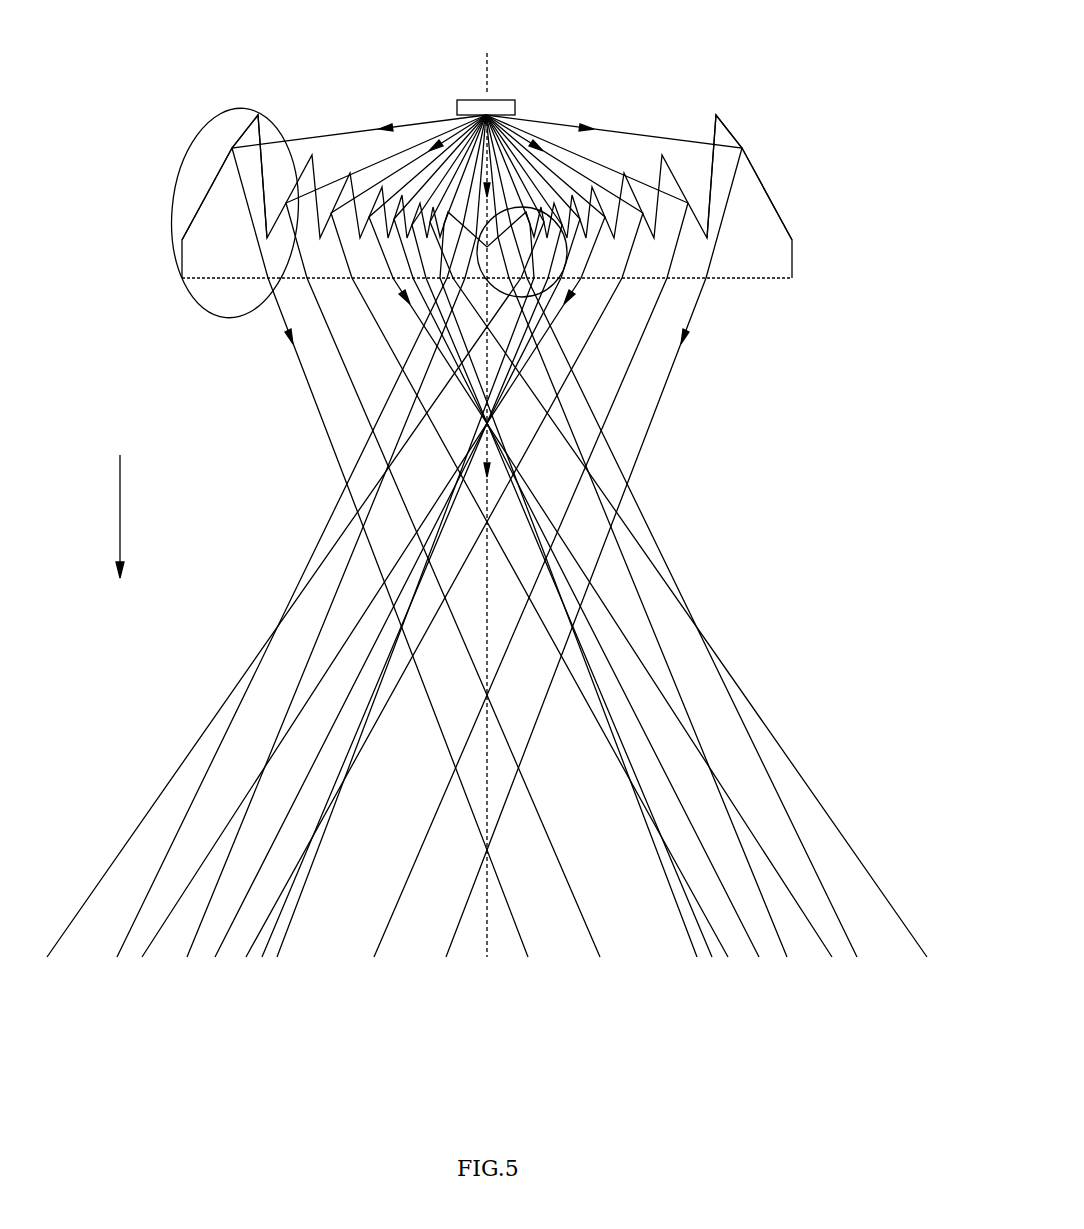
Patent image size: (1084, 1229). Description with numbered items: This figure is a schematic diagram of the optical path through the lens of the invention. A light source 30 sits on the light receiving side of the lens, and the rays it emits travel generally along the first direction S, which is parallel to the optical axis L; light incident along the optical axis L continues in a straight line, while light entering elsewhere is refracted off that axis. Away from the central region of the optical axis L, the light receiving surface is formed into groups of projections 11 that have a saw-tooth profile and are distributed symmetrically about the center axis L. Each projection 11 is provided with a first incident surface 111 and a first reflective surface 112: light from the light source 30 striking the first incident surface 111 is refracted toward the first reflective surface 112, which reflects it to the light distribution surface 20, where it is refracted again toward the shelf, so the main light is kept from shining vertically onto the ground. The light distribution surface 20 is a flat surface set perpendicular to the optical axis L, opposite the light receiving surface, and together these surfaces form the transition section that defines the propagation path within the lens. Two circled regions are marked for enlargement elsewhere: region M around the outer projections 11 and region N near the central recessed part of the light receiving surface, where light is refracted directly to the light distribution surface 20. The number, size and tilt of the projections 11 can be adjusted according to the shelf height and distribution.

The projections 11 is at (215, 195).
The first incident surface 111 is at (262, 130).
The first reflective surface 112 is at (768, 178).
The light distribution surface 20 is at (743, 278).
The light source 30 is at (507, 110).
The optical axis L is at (487, 937).
The region M is at (178, 248).
The region N is at (572, 292).
The first direction S is at (103, 516).